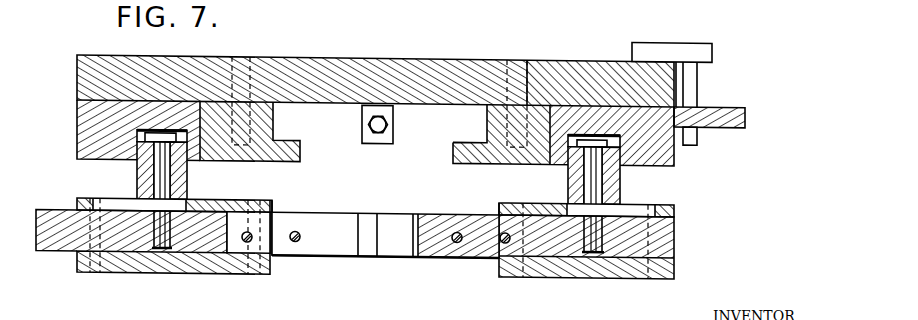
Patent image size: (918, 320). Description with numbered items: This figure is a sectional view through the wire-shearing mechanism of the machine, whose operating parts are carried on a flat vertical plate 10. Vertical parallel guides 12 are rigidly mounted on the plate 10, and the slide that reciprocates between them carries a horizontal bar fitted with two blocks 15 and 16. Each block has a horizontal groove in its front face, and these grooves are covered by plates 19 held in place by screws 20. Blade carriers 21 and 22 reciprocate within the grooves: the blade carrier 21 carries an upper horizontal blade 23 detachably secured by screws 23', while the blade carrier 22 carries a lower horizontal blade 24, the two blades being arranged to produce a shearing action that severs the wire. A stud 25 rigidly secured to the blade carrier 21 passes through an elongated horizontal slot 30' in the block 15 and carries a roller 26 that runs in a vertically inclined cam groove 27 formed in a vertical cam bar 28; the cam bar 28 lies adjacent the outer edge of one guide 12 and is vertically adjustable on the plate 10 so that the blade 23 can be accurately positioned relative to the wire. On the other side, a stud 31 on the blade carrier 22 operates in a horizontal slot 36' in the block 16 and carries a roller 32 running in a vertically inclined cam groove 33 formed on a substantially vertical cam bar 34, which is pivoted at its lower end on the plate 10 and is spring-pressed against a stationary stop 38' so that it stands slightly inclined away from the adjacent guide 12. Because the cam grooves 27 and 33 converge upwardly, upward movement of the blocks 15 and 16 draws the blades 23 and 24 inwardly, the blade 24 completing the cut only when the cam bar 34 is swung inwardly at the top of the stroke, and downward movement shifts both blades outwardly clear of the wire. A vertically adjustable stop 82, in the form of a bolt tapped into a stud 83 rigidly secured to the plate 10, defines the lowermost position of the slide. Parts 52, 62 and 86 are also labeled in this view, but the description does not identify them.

The flat vertical plate 10 is at (575, 58).
The vertical parallel guides 12 is at (258, 105).
The block 15 is at (272, 202).
The block 16 is at (675, 207).
The plates 19 is at (188, 267).
The screws 20 is at (255, 276).
The blade carrier 21 is at (52, 245).
The blade carrier 22 is at (487, 258).
The upper horizontal blade 23 is at (385, 254).
The screws 23' is at (283, 266).
The lower horizontal blade 24 is at (409, 257).
The stud 25 is at (157, 182).
The roller 26 is at (137, 147).
The cam groove 27 is at (133, 122).
The vertical cam bar 28 is at (87, 108).
The elongated horizontal slot 30' is at (77, 221).
The stud 31 is at (598, 278).
The roller 32 is at (618, 170).
The cam groove 33 is at (598, 133).
The cam bar 34 is at (676, 152).
The horizontal slot 36' is at (586, 196).
The stationary stop 38' is at (692, 93).
The upper element 52 is at (383, 0).
The upper element 62 is at (442, 0).
The vertically adjustable stop 82 is at (378, 126).
The stud 83 is at (395, 142).
The side bar 86 is at (745, 117).